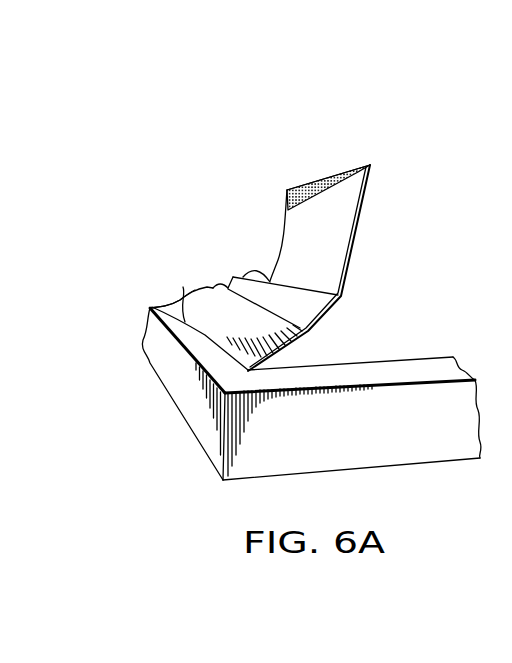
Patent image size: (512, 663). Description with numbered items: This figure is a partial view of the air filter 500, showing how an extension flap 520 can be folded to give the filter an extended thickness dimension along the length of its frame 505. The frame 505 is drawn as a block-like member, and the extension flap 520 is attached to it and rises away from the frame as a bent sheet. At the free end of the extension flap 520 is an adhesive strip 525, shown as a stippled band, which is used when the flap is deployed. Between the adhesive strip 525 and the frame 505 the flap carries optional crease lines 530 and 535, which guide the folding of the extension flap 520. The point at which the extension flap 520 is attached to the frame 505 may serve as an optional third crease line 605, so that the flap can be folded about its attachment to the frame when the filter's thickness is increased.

The air filter 500 is at (198, 112).
The frame 505 is at (204, 444).
The extension flap 520 is at (352, 230).
The adhesive strip 525 is at (287, 201).
The crease line 530 is at (225, 285).
The crease line 535 is at (252, 266).
The third crease line 605 is at (178, 301).